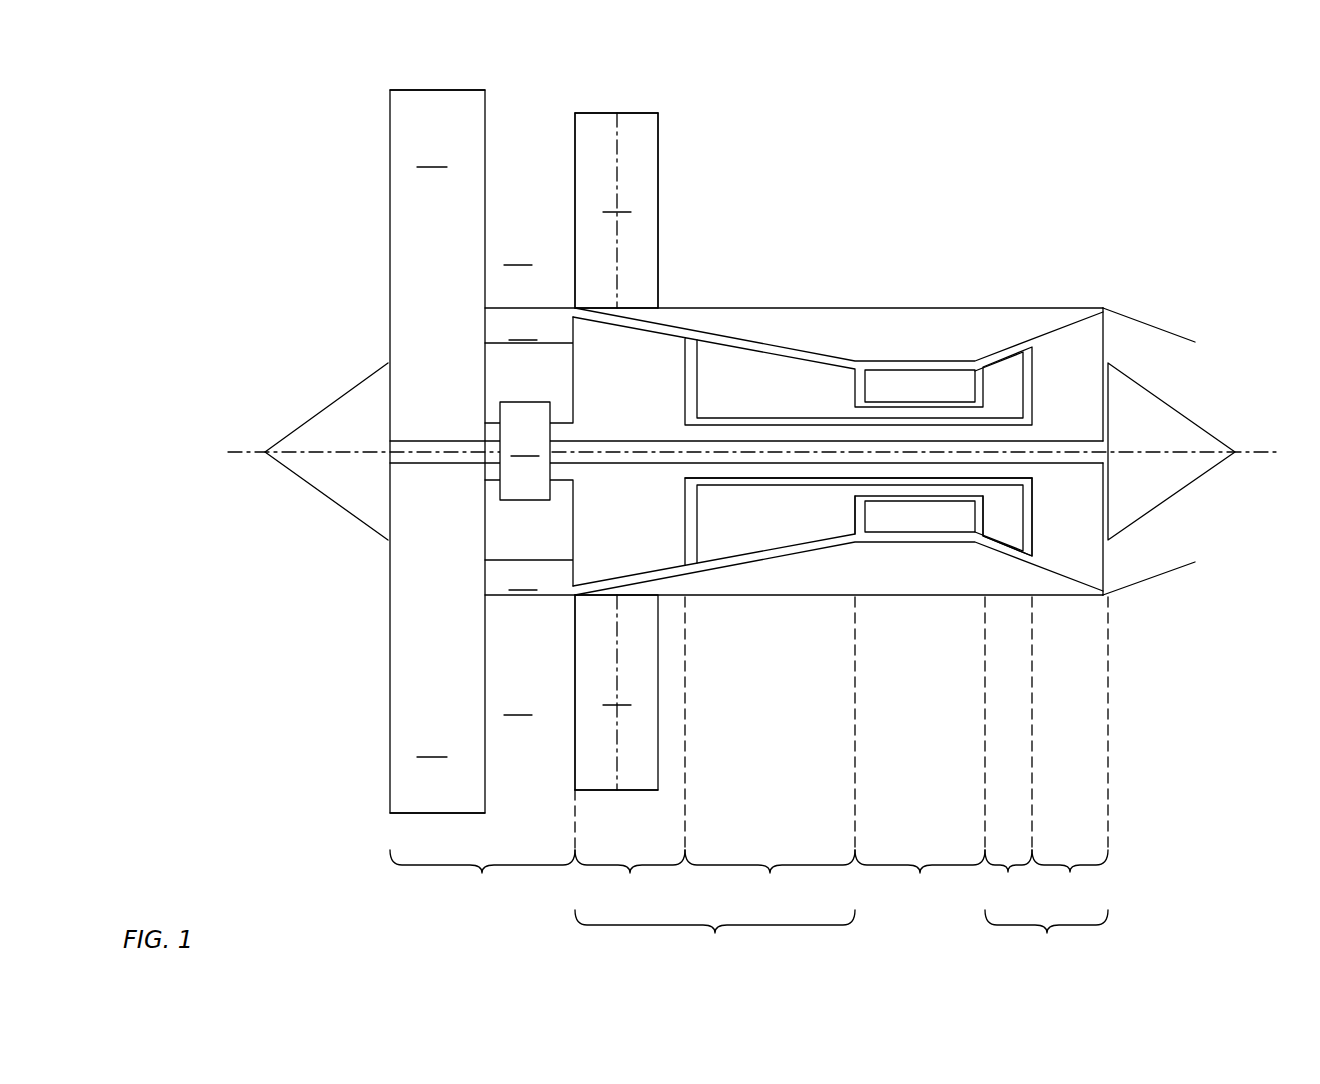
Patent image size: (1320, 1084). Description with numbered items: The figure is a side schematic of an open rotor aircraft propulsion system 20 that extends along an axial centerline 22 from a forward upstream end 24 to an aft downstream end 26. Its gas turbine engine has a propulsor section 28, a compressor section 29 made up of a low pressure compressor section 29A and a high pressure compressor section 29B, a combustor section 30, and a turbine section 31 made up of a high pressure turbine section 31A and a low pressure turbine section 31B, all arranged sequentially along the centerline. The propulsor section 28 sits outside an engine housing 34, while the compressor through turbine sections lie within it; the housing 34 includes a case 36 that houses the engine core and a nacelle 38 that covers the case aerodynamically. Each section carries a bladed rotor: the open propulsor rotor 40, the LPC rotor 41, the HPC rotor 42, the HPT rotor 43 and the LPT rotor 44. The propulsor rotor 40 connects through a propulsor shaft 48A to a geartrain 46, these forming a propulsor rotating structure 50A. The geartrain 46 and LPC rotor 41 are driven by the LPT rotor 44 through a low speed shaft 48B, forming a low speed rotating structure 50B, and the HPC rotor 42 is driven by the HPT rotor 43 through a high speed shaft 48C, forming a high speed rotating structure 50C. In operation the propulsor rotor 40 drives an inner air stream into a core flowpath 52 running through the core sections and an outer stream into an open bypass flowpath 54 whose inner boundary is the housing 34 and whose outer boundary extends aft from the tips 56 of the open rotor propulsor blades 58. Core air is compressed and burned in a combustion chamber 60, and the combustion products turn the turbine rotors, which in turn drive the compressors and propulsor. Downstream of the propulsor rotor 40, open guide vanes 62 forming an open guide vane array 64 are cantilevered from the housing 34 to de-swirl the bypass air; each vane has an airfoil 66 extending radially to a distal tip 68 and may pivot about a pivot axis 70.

The open rotor aircraft propulsion system 20 is at (273, 131).
The axial centerline 22 is at (1272, 458).
The upstream end 24 is at (265, 455).
The downstream end 26 is at (1245, 446).
The propulsor section 28 is at (482, 878).
The compressor section 29 is at (715, 938).
The low pressure compressor section 29A is at (630, 848).
The high pressure compressor section 29B is at (770, 752).
The combustor section 30 is at (920, 752).
The turbine section 31 is at (1046, 938).
The high pressure turbine section 31A is at (1009, 745).
The low pressure turbine section 31B is at (1070, 745).
The engine housing 34 is at (850, 307).
The case 36 is at (725, 337).
The nacelle 38 is at (762, 307).
The open propulsor rotor 40 is at (388, 573).
The LPC rotor 41 is at (573, 537).
The HPC rotor 42 is at (692, 537).
The HPT rotor 43 is at (1021, 515).
The LPT rotor 44 is at (1105, 565).
The geartrain 46 is at (525, 451).
The propulsor shaft 48A is at (492, 415).
The low speed shaft 48B is at (808, 480).
The high speed shaft 48C is at (862, 502).
The propulsor rotating structure 50A is at (354, 331).
The low speed rotating structure 50B is at (670, 332).
The high speed rotating structure 50C is at (775, 355).
The core flowpath 52 is at (523, 450).
The bypass flowpath 54 is at (518, 475).
The tips 56 is at (465, 90).
The open rotor propulsor blades 58 is at (432, 447).
The combustion chamber 60 is at (920, 385).
The open guide vanes 62 is at (658, 175).
The open guide vane array 64 is at (670, 140).
The airfoil 66 is at (617, 451).
The tip 68 is at (618, 113).
The pivot axis 70 is at (612, 125).